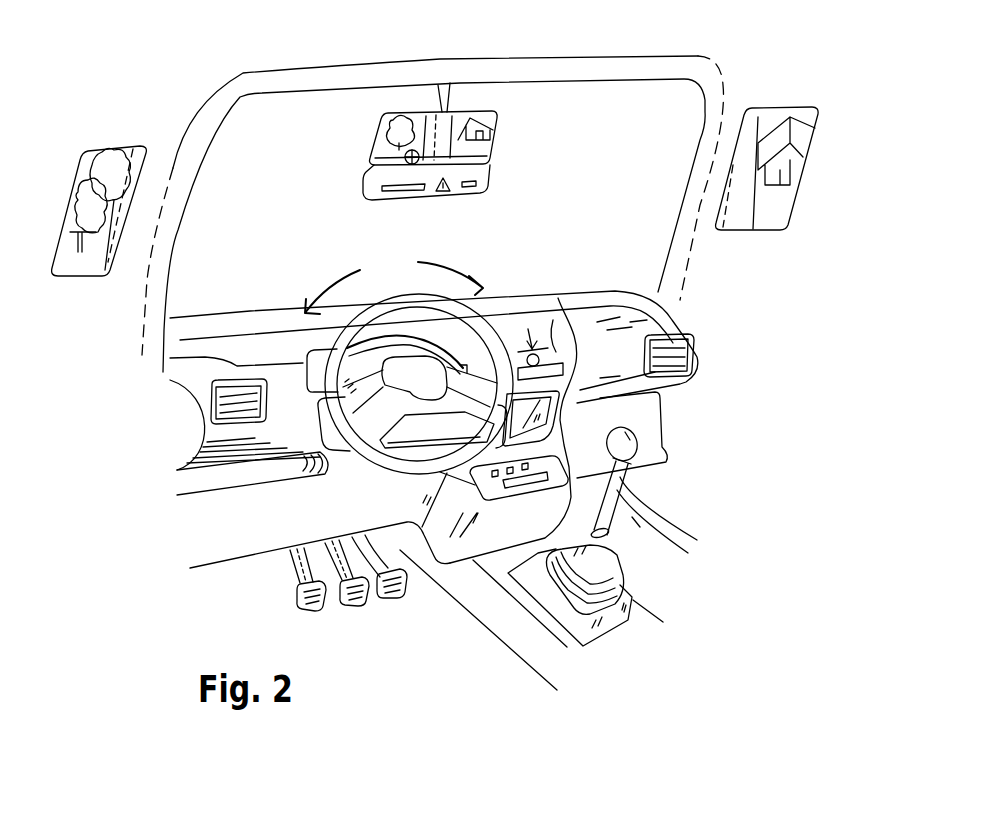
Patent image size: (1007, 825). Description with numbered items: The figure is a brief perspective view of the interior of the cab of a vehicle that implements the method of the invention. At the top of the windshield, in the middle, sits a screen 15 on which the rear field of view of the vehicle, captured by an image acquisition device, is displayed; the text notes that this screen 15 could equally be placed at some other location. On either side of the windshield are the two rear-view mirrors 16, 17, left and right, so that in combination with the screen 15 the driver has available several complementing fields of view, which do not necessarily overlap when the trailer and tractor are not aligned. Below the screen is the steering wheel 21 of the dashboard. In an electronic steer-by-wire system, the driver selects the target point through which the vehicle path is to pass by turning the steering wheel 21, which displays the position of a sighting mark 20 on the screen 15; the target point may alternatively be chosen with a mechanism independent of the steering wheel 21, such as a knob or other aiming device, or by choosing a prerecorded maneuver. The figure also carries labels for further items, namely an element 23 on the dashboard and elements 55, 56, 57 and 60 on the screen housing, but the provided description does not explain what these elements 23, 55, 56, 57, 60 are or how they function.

The screen 15 is at (495, 147).
The left rear-view mirror 16 is at (132, 148).
The right rear-view mirror 17 is at (787, 100).
The sighting mark 20 is at (404, 158).
The steering wheel 21 is at (400, 300).
The dashboard control element 23 is at (559, 300).
The operating button 55 is at (382, 188).
The operating button 56 is at (473, 190).
The warning button 57 is at (441, 192).
The mirror housing button strip 60 is at (486, 170).